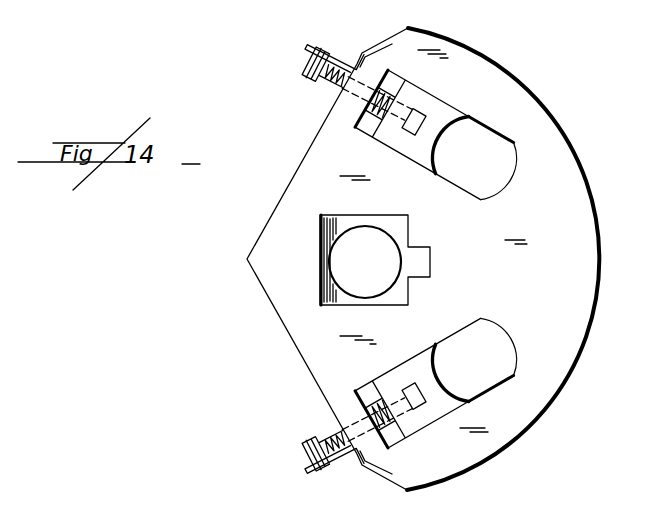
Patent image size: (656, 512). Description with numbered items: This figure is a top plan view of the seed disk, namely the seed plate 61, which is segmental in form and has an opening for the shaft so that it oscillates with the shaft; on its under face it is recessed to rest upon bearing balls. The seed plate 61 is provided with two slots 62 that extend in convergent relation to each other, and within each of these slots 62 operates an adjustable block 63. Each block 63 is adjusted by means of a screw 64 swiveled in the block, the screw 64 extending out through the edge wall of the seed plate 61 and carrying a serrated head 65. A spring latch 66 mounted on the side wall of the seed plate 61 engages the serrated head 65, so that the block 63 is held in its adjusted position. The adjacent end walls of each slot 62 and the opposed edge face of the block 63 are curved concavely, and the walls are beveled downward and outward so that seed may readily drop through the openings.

The seed plate 61 is at (577, 276).
The slots 62 is at (514, 158).
The adjustable block 63 is at (452, 108).
The screw 64 is at (344, 88).
The serrated head 65 is at (304, 75).
The spring latch 66 is at (338, 57).